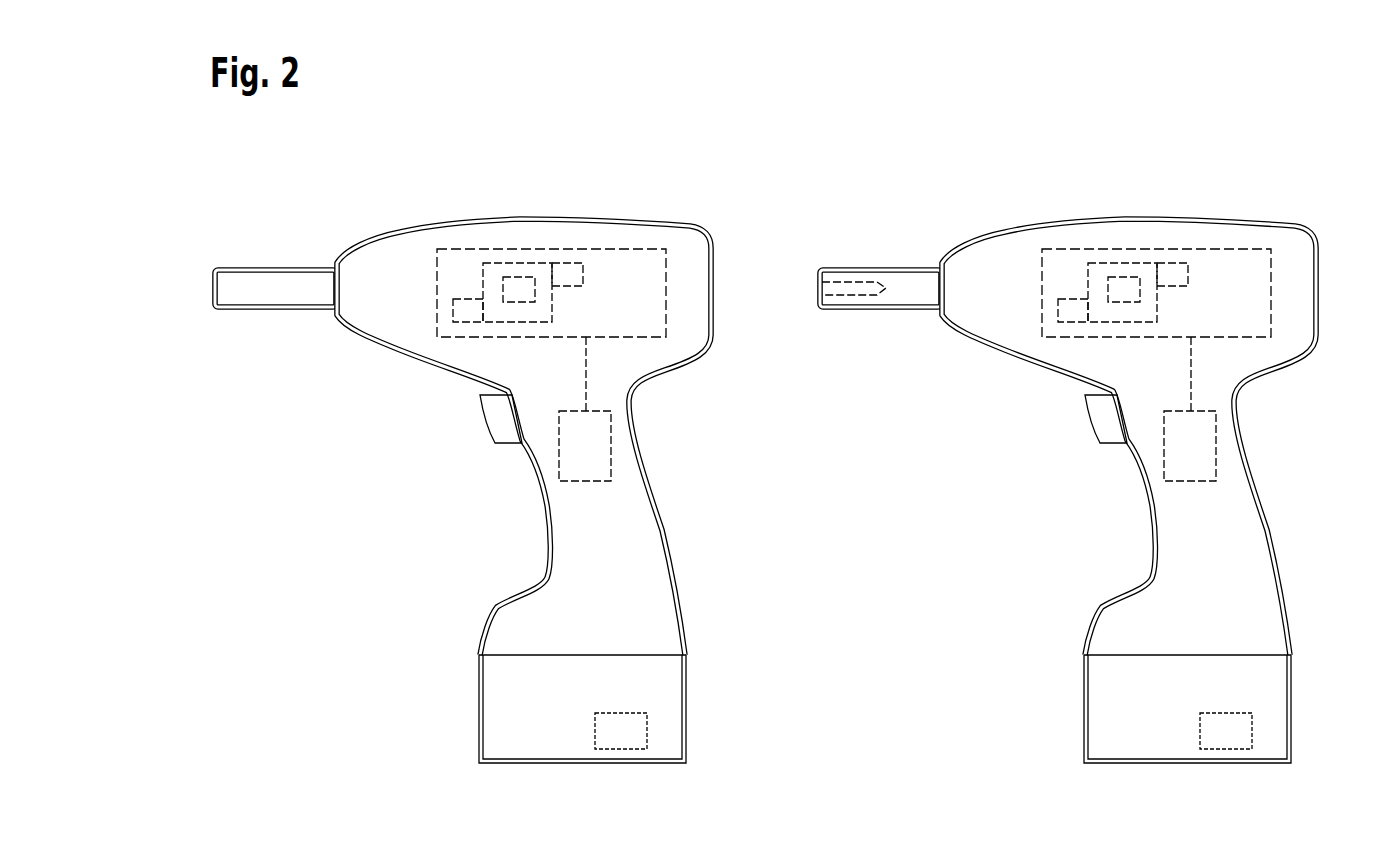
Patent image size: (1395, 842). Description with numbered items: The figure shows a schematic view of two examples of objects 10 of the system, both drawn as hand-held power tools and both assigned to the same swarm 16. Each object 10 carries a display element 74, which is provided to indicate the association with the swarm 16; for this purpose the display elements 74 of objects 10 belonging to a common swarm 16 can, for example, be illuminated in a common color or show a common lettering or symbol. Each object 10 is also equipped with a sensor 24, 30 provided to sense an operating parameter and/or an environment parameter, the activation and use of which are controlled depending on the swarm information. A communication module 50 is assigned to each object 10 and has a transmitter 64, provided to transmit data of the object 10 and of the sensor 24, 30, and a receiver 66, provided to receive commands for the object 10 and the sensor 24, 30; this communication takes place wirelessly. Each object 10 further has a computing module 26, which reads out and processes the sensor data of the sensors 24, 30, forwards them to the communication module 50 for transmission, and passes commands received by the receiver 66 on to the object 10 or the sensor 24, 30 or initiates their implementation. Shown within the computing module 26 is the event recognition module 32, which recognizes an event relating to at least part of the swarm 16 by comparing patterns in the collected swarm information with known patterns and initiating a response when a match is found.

The object 10 is at (510, 690).
The swarm 16 is at (847, 150).
The sensor 24 is at (611, 448).
The computing module 26 is at (631, 249).
The sensor 30 is at (1216, 448).
The event recognition module 32 is at (527, 277).
The communication module 50 is at (502, 263).
The transmitter 64 is at (572, 263).
The receiver 66 is at (463, 322).
The display element 74 is at (647, 730).